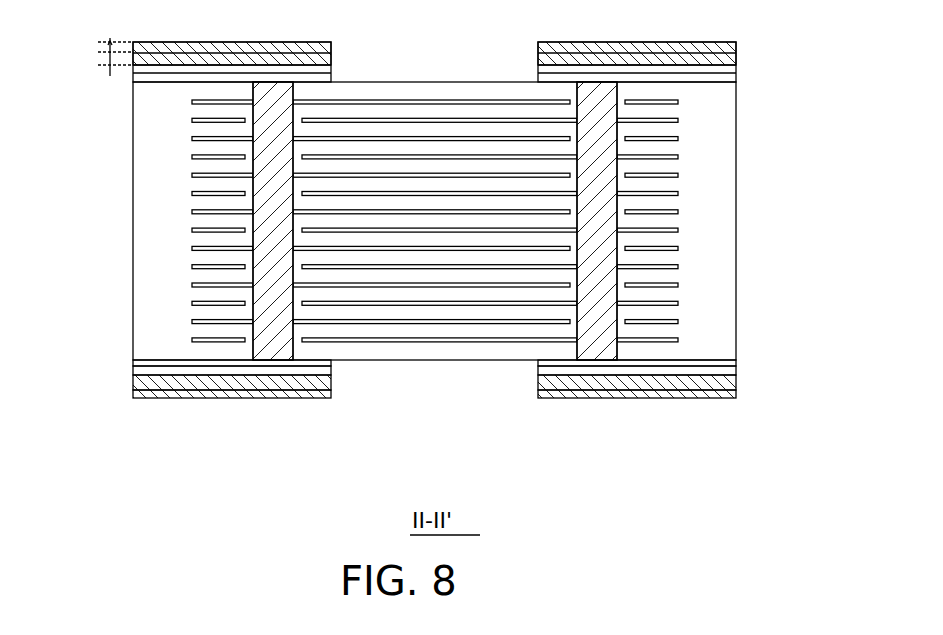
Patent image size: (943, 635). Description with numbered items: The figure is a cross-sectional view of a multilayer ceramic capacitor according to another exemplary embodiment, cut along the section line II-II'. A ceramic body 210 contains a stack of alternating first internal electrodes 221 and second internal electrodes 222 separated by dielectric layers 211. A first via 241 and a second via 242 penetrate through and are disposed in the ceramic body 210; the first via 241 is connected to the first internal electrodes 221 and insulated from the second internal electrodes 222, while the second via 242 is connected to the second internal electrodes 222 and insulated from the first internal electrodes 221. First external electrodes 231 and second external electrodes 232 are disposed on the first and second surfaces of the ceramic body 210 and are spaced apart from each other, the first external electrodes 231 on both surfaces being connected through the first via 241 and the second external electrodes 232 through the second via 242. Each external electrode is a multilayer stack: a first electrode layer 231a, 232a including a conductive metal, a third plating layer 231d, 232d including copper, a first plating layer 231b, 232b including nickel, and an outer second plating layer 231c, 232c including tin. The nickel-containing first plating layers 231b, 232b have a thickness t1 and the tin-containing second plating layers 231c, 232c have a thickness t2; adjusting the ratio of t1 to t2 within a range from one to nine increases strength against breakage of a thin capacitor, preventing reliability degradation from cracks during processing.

The ceramic body 210 is at (435, 190).
The dielectric layer 211 is at (198, 167).
The first internal electrode 221 is at (193, 103).
The second internal electrode 222 is at (203, 122).
The first external electrode 231 is at (235, 428).
The first electrode layer 231a is at (335, 457).
The first plating layer 231b is at (211, 382).
The second plating layer 231c is at (252, 372).
The third plating layer 231d is at (290, 362).
The second external electrode 232 is at (632, 428).
The first electrode layer 232a is at (538, 457).
The first plating layer 232b is at (659, 382).
The second plating layer 232c is at (617, 372).
The third plating layer 232d is at (580, 362).
The first via 241 is at (265, 268).
The second via 242 is at (605, 268).
The thickness of the first plating layers t1 is at (104, 58).
The thickness of the second plating layers t2 is at (104, 46).